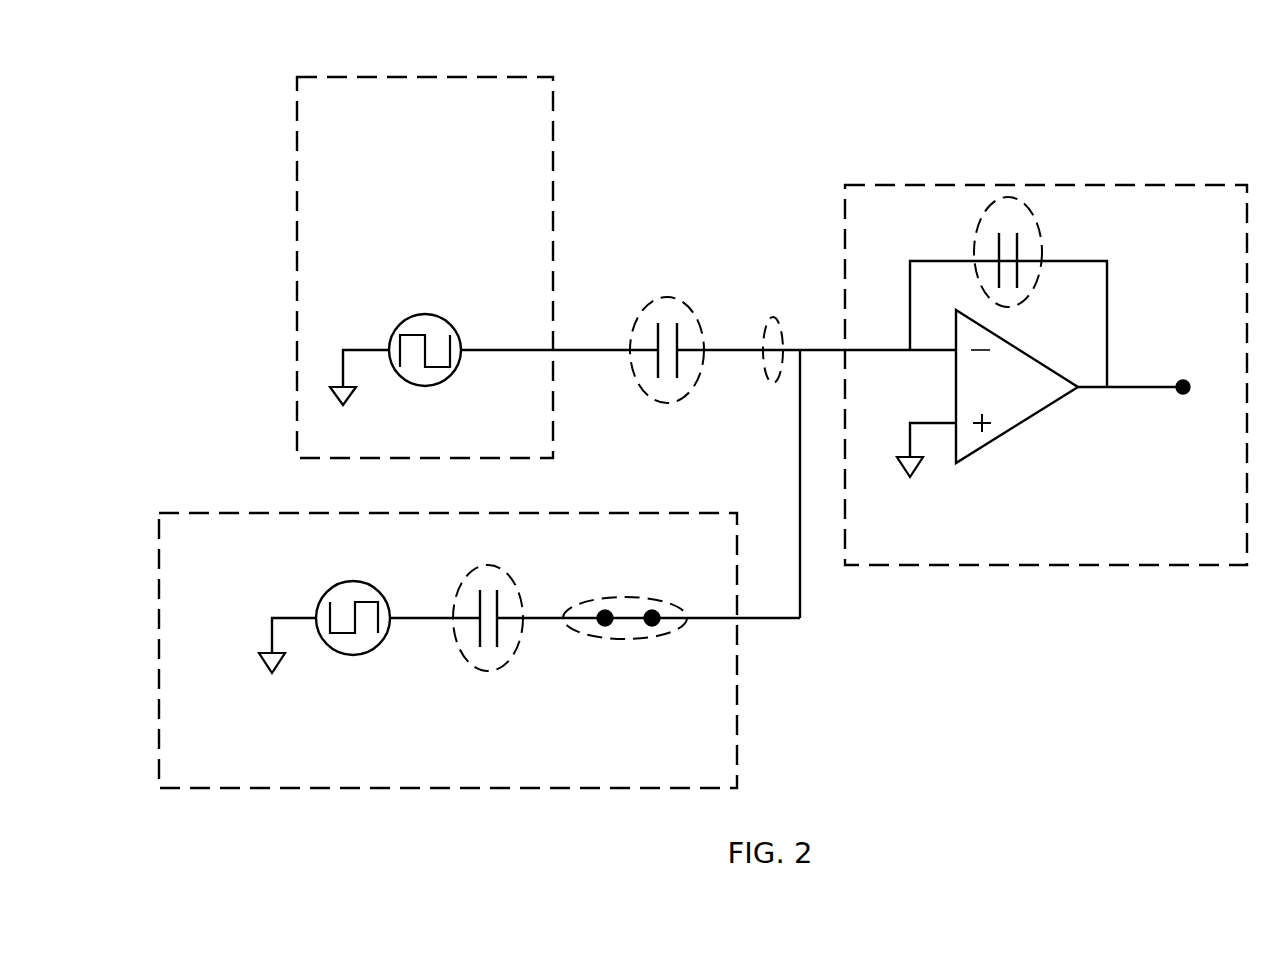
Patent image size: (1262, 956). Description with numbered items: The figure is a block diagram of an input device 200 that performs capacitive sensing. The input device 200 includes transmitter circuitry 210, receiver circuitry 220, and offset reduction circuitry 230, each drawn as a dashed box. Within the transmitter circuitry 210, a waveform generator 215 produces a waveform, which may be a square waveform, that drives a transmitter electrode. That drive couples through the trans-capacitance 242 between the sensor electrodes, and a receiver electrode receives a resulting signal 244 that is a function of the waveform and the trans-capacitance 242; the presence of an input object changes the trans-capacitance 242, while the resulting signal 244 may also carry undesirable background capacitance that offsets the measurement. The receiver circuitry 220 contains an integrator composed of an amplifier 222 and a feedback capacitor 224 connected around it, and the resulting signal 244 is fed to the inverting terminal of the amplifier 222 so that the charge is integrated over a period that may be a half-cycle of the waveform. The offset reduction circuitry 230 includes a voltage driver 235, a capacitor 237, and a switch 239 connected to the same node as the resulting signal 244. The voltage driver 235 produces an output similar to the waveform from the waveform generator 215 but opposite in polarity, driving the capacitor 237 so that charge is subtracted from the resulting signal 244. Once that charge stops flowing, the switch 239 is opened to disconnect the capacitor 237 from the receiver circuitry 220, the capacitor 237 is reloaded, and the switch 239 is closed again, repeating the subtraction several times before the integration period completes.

The input device 200 is at (870, 64).
The transmitter circuitry 210 is at (442, 176).
The waveform generator 215 is at (450, 325).
The receiver circuitry 220 is at (1014, 556).
The amplifier 222 is at (1032, 384).
The feedback (FB) capacitor 224 is at (1043, 247).
The offset reduction circuitry 230 is at (487, 777).
The voltage driver 235 is at (328, 595).
The capacitor 237 is at (520, 598).
The switch 239 is at (648, 638).
The trans-capacitance 242 is at (695, 383).
The resulting signal 244 is at (777, 315).